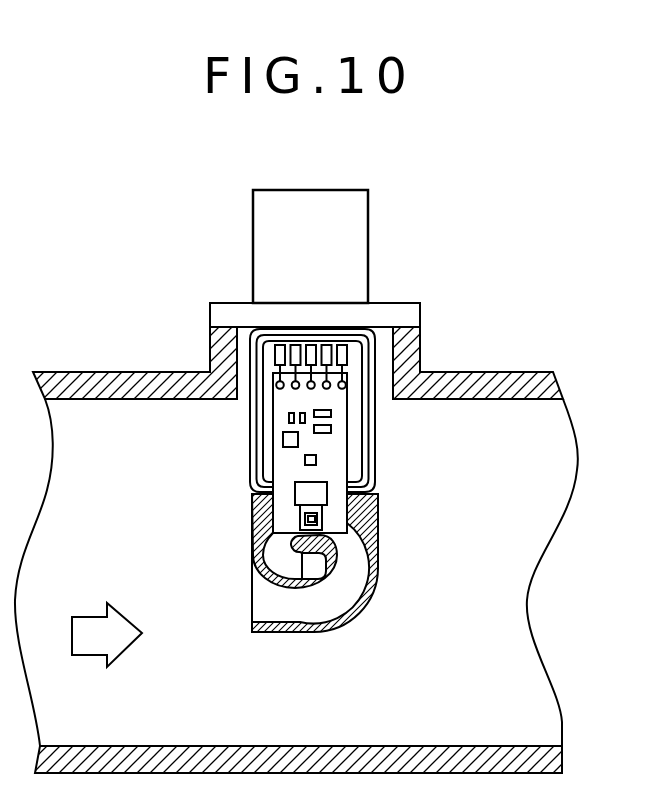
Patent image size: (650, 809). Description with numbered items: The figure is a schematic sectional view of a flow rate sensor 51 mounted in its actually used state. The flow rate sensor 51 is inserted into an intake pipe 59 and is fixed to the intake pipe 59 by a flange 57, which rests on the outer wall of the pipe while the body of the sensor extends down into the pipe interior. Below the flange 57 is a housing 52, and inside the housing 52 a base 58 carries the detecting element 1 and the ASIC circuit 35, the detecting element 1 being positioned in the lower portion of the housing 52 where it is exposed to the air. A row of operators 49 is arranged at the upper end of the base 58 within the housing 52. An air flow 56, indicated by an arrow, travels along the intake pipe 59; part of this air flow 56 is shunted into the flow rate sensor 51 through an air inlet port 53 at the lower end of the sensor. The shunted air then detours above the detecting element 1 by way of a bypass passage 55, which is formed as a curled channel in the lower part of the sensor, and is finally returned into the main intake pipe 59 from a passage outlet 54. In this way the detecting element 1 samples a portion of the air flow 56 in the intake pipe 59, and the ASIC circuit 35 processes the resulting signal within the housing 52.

The detecting element 1 is at (327, 512).
The ASIC circuit 35 is at (283, 440).
The operator 49 is at (353, 388).
The flow rate sensor 51 is at (253, 214).
The housing 52 is at (377, 464).
The air inlet port 53 is at (252, 595).
The passage outlet 54 is at (313, 560).
The bypass passage 55 is at (353, 565).
The air flow 56 is at (90, 645).
The flange 57 is at (402, 303).
The base 58 is at (290, 395).
The intake pipe 59 is at (105, 372).